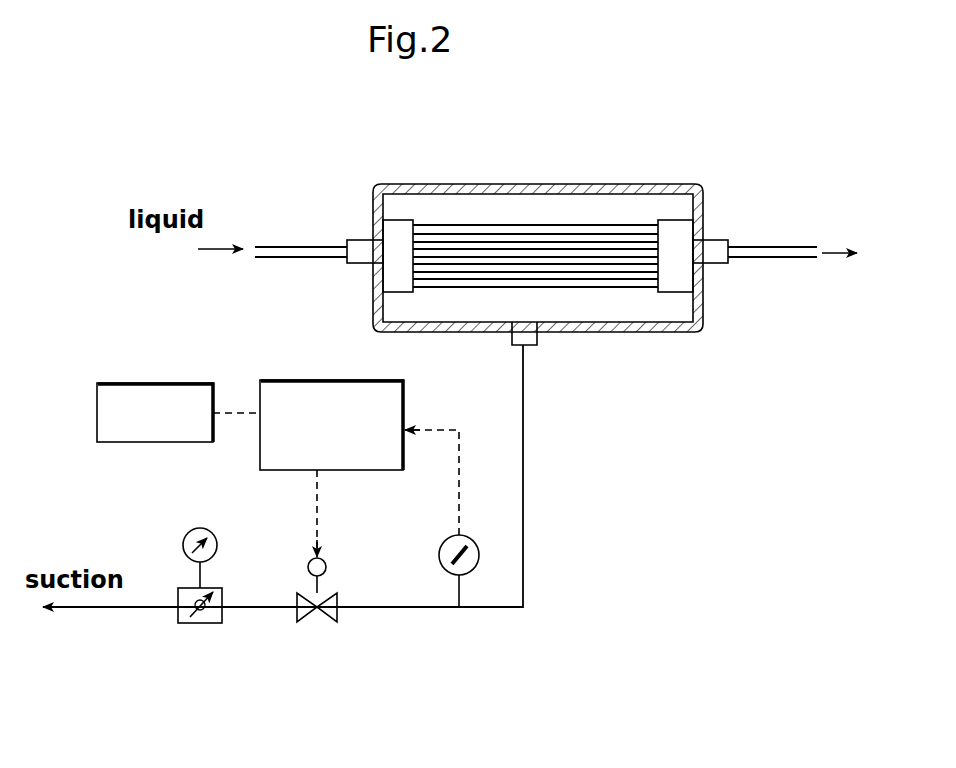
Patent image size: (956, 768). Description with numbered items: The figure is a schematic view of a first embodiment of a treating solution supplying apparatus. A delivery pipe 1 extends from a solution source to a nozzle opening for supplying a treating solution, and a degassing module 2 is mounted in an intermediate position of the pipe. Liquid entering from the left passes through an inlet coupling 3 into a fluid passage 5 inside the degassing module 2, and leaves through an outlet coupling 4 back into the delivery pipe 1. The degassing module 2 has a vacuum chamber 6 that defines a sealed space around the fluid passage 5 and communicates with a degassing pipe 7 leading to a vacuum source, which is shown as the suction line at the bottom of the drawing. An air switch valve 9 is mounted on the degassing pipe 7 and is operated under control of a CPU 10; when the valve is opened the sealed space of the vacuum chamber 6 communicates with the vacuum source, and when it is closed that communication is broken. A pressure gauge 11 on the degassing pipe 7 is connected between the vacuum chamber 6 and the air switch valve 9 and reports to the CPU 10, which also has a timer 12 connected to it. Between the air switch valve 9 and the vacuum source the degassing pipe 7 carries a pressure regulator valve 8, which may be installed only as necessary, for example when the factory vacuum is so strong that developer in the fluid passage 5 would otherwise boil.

The delivery pipe 1 is at (282, 243).
The degassing module 2 is at (586, 176).
The inlet coupling 3 is at (349, 270).
The outlet coupling 4 is at (714, 258).
The fluid passage 5 is at (503, 240).
The vacuum chamber 6 is at (602, 333).
The degassing pipe 7 is at (525, 468).
The pressure regulator valve 8 is at (209, 625).
The air switch valve 9 is at (327, 613).
The CPU 10 is at (291, 471).
The pressure gauge 11 is at (447, 542).
The timer 12 is at (165, 444).